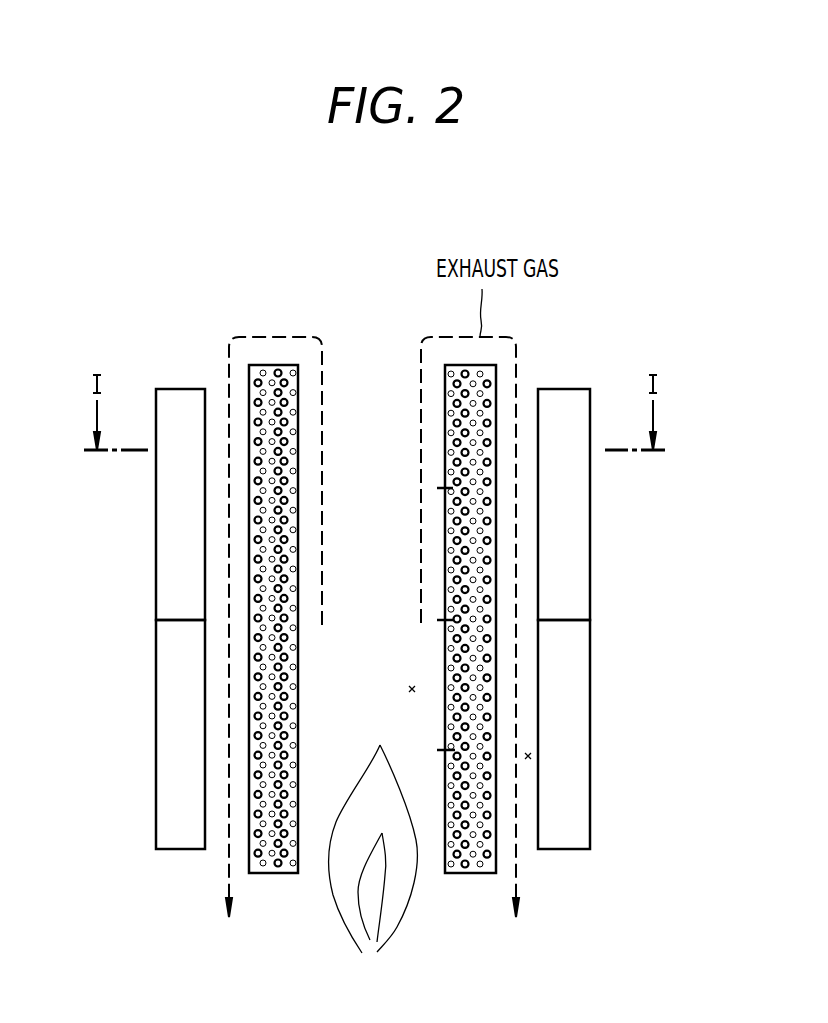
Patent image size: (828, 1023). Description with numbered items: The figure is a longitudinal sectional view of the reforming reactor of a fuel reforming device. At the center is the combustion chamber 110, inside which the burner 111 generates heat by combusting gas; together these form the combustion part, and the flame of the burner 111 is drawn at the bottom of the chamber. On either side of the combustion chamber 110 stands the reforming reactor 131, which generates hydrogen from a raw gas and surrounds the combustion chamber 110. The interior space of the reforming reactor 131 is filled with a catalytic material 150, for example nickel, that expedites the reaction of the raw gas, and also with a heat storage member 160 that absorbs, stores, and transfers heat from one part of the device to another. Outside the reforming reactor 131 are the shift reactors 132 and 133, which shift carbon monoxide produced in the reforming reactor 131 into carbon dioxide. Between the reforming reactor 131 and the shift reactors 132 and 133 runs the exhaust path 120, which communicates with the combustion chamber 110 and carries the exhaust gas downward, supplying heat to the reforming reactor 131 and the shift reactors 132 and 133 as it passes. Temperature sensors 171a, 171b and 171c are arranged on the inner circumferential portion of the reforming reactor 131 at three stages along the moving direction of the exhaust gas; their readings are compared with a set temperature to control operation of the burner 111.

The combustion chamber 110 is at (412, 689).
The burner 111 is at (388, 935).
The exhaust path 120 is at (528, 756).
The reforming reactor 131 is at (252, 685).
The shift reactor 132 is at (165, 788).
The shift reactor 133 is at (165, 535).
The catalytic material 150 is at (490, 568).
The heat storage member 160 is at (556, 619).
The temperature sensor 171a is at (438, 750).
The temperature sensor 171b is at (438, 620).
The temperature sensor 171c is at (438, 488).